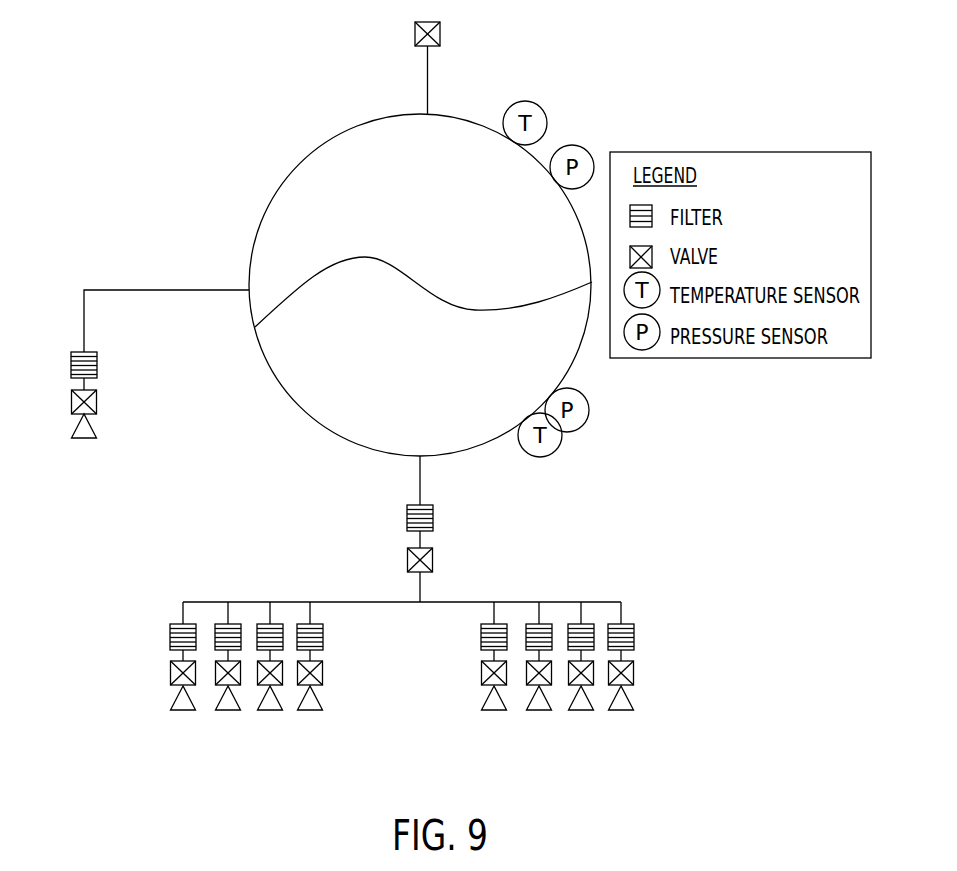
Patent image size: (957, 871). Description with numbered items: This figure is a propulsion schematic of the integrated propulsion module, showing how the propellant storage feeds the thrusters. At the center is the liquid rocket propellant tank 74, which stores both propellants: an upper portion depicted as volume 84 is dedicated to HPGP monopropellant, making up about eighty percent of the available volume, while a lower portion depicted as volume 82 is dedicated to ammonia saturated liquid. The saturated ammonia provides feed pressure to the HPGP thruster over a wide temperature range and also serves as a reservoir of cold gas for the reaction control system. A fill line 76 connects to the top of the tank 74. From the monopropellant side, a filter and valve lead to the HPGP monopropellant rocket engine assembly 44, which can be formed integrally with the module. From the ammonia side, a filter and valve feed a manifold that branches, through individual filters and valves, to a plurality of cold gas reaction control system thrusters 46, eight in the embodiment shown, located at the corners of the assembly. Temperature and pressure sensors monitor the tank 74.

The liquid rocket propellant tank 74 is at (259, 236).
The volume dedicated to HPGP monopropellant 84 is at (327, 162).
The volume dedicated to ammonia saturated liquid 82 is at (327, 408).
The fill line 76 is at (415, 33).
The HPGP monopropellant rocket engine assembly 44 is at (72, 428).
The reaction control system thrusters 46 is at (183, 712).